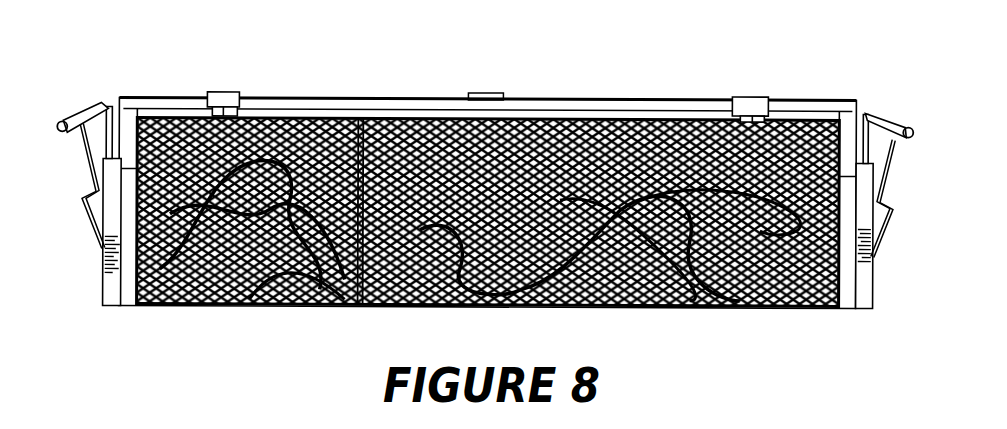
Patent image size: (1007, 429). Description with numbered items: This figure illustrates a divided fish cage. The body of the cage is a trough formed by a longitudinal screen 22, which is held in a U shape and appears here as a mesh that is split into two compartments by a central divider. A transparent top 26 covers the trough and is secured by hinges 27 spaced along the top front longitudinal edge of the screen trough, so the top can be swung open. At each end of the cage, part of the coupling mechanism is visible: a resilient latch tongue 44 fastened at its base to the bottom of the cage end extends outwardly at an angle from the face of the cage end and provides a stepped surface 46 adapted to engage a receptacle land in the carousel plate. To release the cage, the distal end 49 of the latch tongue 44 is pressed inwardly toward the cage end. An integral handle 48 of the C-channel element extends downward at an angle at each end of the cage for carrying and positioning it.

The longitudinal screen 22 is at (362, 308).
The transparent top 26 is at (326, 98).
The hinges 27 is at (222, 95).
The resilient latch tongue 44 is at (92, 232).
The stepped surface 46 is at (83, 197).
The handle 48 is at (63, 121).
The distal end 49 is at (98, 114).